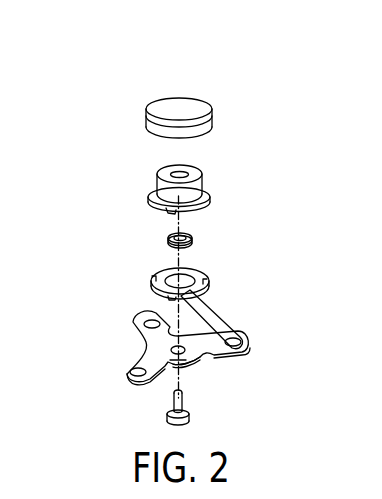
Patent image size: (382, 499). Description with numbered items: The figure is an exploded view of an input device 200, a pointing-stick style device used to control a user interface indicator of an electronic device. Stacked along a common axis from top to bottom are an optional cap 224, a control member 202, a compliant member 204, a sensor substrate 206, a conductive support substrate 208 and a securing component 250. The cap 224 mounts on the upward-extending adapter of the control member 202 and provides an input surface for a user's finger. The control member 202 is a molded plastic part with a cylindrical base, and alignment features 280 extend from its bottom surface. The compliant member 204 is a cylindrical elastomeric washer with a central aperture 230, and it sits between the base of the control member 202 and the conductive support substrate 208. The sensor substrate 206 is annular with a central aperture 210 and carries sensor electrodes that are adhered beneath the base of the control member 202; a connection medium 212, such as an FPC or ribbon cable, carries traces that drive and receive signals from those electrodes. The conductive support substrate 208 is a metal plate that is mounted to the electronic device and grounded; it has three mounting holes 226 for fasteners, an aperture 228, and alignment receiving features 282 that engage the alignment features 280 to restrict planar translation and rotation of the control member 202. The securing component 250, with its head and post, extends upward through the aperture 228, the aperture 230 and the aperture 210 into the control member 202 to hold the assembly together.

The input device 200 is at (121, 70).
The cap 224 is at (192, 115).
The control member 202 is at (176, 183).
The alignment features 280 is at (160, 206).
The aperture 230 is at (167, 238).
The compliant member 204 is at (190, 236).
The sensor substrate 206 is at (176, 278).
The aperture 210 is at (175, 285).
The connection medium 212 is at (200, 315).
The conductive support substrate 208 is at (187, 368).
The mounting holes 226 is at (146, 324).
The aperture 228 is at (205, 357).
The alignment receiving features 282 is at (180, 372).
The securing component 250 is at (170, 402).